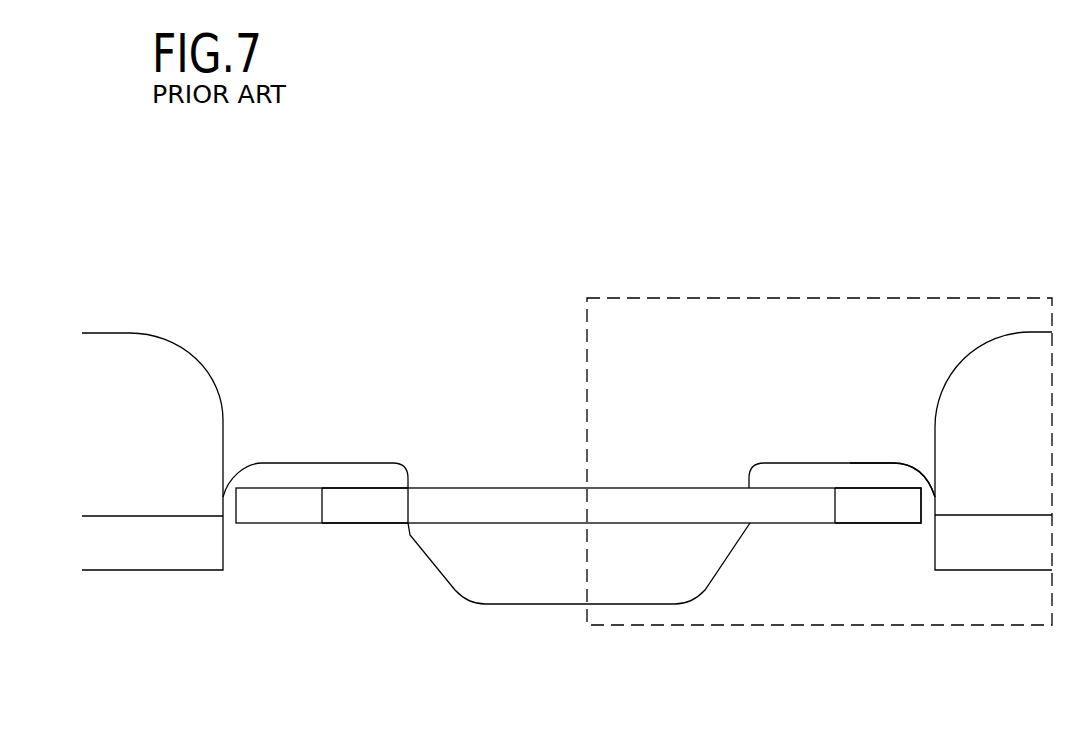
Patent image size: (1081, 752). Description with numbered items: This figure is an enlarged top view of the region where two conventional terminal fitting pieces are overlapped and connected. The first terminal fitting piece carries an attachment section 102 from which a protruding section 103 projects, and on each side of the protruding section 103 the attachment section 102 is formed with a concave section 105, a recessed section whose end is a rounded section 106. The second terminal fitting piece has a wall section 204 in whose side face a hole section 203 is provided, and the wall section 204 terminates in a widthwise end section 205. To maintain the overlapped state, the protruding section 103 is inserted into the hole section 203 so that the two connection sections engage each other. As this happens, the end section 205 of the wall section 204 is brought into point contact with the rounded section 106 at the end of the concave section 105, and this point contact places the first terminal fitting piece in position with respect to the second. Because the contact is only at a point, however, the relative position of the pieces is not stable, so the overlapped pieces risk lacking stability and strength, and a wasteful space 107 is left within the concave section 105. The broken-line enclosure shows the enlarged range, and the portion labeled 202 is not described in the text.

The attachment section 102 is at (317, 328).
The protruding section 103 is at (493, 572).
The hole section 203 is at (543, 488).
The left sealing resin portion 202 is at (282, 475).
The wall section 204 is at (365, 508).
The widthwise end section 205 is at (907, 507).
The concave section 105 is at (825, 450).
The wasteful space 107 is at (867, 477).
The rounded section 106 is at (920, 467).